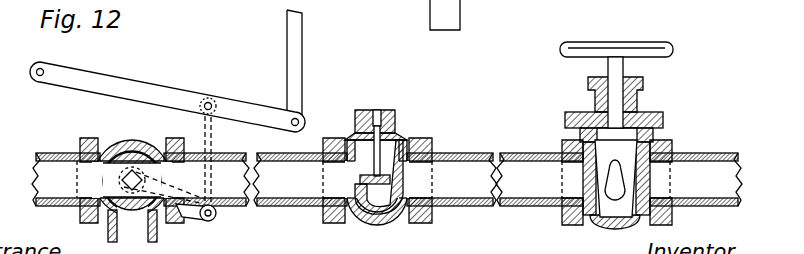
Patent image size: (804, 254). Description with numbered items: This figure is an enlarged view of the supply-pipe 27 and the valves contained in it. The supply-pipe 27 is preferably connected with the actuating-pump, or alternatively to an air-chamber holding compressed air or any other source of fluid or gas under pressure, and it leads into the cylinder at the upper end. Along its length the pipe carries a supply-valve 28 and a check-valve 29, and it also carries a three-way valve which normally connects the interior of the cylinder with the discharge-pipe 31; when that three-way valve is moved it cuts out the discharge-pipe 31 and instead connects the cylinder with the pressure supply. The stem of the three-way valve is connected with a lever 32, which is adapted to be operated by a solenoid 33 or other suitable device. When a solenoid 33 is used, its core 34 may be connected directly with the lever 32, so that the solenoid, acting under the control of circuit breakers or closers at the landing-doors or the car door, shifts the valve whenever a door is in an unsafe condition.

The supply-pipe 27 is at (706, 156).
The supply-valve 28 is at (616, 85).
The check-valve 29 is at (377, 167).
The discharge-pipe 31 is at (141, 228).
The lever 32 is at (167, 97).
The solenoid 33 is at (445, 15).
The core 34 is at (300, 69).